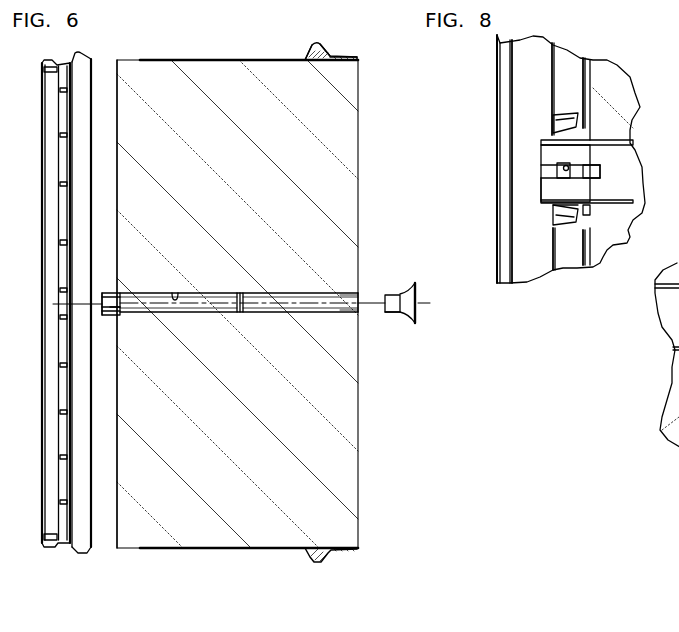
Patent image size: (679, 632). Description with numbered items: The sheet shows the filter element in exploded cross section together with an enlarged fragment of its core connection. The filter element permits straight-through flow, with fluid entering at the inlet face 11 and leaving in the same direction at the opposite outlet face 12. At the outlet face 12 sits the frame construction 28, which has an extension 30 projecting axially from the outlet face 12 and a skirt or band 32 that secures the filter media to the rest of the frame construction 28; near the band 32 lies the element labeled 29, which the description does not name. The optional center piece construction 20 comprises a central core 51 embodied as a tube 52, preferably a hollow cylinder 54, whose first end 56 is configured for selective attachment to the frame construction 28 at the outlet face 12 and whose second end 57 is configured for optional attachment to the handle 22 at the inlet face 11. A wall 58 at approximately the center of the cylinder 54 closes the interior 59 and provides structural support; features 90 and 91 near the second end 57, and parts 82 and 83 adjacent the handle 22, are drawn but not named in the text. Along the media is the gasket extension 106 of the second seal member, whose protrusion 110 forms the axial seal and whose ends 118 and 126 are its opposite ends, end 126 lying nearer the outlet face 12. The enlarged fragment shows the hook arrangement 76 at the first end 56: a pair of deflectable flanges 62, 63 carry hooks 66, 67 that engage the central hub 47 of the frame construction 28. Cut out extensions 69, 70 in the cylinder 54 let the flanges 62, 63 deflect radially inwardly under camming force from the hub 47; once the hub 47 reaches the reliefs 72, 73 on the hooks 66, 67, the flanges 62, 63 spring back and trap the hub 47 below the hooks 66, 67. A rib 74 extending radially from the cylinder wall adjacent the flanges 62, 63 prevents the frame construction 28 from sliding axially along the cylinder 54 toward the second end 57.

In FIG. 6, the inlet face 11 is at (357, 468).
In FIG. 6, the outlet face 12 is at (117, 542).
In FIG. 6, the center piece construction 20 is at (198, 312).
In FIG. 6, the handle 22 is at (420, 303).
In FIG. 6, the frame construction 28 is at (97, 47).
In FIG. 6, the lower end clip 29 is at (48, 547).
In FIG. 6, the extension 30 is at (50, 68).
In FIG. 6, the skirt or band 32 is at (77, 553).
In FIG. 6, the hub 47 is at (60, 294).
In FIG. 8, the hub 47 is at (550, 173).
In FIG. 6, the central core 51 is at (275, 293).
In FIG. 6, the tube 52 is at (190, 296).
In FIG. 6, the hollow cylinder 54 is at (268, 312).
In FIG. 8, the hollow cylinder 54 is at (623, 139).
In FIG. 6, the first end 56 is at (102, 296).
In FIG. 8, the first end 56 is at (542, 198).
In FIG. 6, the second end 57 is at (358, 293).
In FIG. 6, the wall 58 is at (243, 292).
In FIG. 6, the interior 59 is at (176, 286).
In FIG. 6, the deflectable flange 62 is at (105, 293).
In FIG. 8, the deflectable flange 62 is at (541, 152).
In FIG. 6, the deflectable flange 63 is at (108, 316).
In FIG. 8, the deflectable flange 63 is at (541, 189).
In FIG. 8, the hook 66 is at (552, 139).
In FIG. 8, the hook 67 is at (551, 205).
In FIG. 6, the cut out extension 69 is at (115, 308).
In FIG. 8, the cut out extension 69 is at (574, 166).
In FIG. 8, the cut out extension 70 is at (568, 166).
In FIG. 8, the relief 72 is at (555, 132).
In FIG. 8, the relief 73 is at (555, 209).
In FIG. 6, the rib 74 is at (118, 292).
In FIG. 8, the rib 74 is at (590, 210).
In FIG. 8, the hook arrangement 76 is at (520, 138).
In FIG. 6, the nut 82 is at (392, 295).
In FIG. 6, the washer 83 is at (392, 312).
In FIG. 6, the upper edge 90 is at (343, 292).
In FIG. 6, the lower edge 91 is at (345, 312).
In FIG. 6, the gasket extension 106 is at (326, 56).
In FIG. 6, the protrusion 110 is at (317, 43).
In FIG. 6, the end 118 is at (358, 58).
In FIG. 6, the end 126 is at (308, 58).